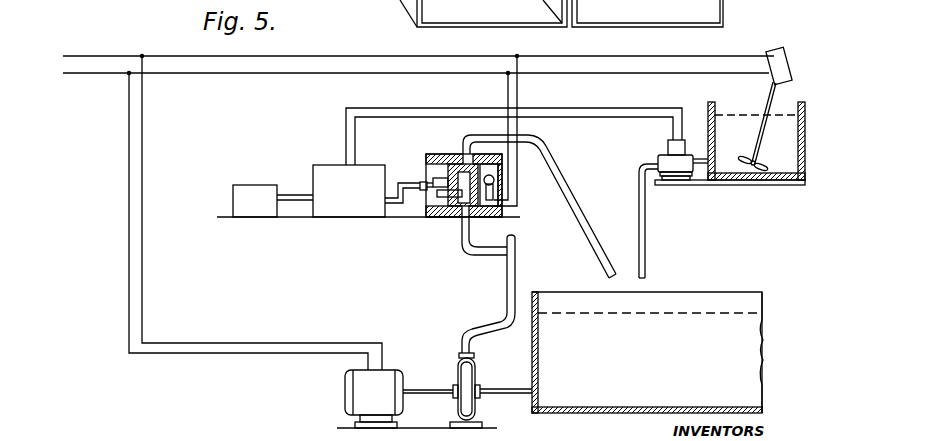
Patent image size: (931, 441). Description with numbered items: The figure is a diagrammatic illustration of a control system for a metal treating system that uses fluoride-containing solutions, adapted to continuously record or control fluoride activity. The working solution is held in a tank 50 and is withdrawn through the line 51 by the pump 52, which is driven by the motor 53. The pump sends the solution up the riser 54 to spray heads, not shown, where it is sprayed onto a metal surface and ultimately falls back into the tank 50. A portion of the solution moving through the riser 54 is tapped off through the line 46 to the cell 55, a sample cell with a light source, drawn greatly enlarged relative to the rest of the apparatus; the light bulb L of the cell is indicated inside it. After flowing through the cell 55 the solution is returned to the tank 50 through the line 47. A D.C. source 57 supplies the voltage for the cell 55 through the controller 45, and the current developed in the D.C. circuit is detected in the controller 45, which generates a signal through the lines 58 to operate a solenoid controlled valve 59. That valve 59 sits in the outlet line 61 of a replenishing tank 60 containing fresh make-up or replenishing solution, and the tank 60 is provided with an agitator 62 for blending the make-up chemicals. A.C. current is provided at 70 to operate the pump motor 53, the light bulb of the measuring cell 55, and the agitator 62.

The A.C. current supply 70 is at (63, 57).
The controller 45 is at (325, 165).
The D.C. source 57 is at (252, 185).
The cell 55 is at (448, 154).
The lamp L is at (498, 175).
The lines 58 is at (568, 108).
The line 47 is at (545, 158).
The line 46 is at (462, 232).
The riser 54 is at (507, 280).
The pump 52 is at (476, 378).
The line 51 is at (492, 393).
The motor 53 is at (345, 388).
The tank 50 is at (695, 292).
The solenoid controlled valve 59 is at (668, 148).
The replenishing tank 60 is at (708, 104).
The outlet line 61 is at (639, 202).
The agitator 62 is at (785, 48).